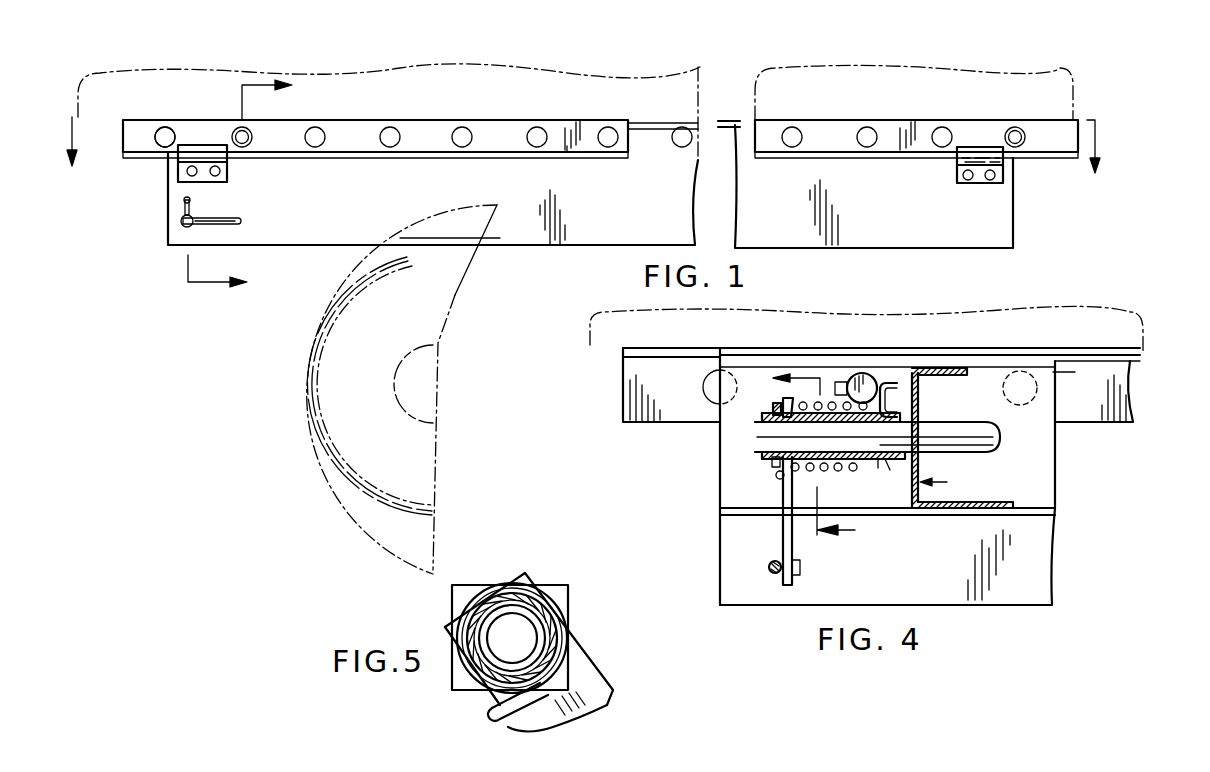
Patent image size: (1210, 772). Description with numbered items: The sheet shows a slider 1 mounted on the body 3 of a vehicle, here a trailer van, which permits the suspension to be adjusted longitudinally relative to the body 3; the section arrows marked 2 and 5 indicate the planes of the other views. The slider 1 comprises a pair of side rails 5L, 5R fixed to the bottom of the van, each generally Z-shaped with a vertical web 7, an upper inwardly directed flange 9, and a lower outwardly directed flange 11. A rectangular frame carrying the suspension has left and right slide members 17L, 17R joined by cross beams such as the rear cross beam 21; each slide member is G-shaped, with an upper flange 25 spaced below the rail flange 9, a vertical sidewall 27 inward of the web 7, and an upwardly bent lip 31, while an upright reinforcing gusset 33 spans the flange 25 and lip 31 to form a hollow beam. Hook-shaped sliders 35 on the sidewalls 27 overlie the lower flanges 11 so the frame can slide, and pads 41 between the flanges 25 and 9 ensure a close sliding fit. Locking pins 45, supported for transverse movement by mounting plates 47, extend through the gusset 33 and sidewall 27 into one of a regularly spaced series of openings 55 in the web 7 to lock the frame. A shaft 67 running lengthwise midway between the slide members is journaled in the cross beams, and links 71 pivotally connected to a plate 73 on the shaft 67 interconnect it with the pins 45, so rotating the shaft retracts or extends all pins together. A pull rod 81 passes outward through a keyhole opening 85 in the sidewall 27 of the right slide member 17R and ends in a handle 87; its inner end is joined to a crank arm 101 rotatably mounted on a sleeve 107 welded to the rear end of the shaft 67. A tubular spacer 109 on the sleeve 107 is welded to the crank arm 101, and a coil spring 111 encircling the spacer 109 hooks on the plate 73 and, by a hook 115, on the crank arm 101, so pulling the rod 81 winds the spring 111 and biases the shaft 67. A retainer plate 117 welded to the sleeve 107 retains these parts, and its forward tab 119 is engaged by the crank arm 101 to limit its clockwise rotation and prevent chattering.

In FIG. 1, the slider 1 is at (140, 230).
In FIG. 1, the section line 2- 2 is at (581, 158).
In FIG. 1, the body 3 is at (470, 87).
In FIG. 4, the body 3 is at (900, 325).
In FIG. 4, the section line 5- 5 is at (816, 458).
In FIG. 1, the right side rail 5R is at (375, 119).
In FIG. 4, the left side rail 5L is at (660, 424).
In FIG. 1, the vertical web 7 is at (1060, 142).
In FIG. 4, the vertical web 7 is at (1110, 397).
In FIG. 4, the upper flange 9 is at (1117, 353).
In FIG. 1, the lower flange 11 is at (1050, 158).
In FIG. 1, the right slide member 17R is at (433, 198).
In FIG. 4, the left slide member 17L is at (1068, 494).
In FIG. 4, the rear cross beam 21 is at (950, 483).
In FIG. 4, the upper flange 25 is at (1057, 370).
In FIG. 1, the sidewall 27 is at (460, 203).
In FIG. 4, the lip 31 is at (1040, 578).
In FIG. 4, the reinforcing gusset 33 is at (1043, 445).
In FIG. 1, the hook-shaped slider 35 is at (205, 179).
In FIG. 1, the pad 41 is at (650, 127).
In FIG. 4, the pad 41 is at (1030, 360).
In FIG. 1, the locking pin 45 is at (250, 129).
In FIG. 4, the locking pin 45 is at (884, 383).
In FIG. 4, the mounting plate 47 is at (880, 497).
In FIG. 1, the opening 55 is at (233, 128).
In FIG. 4, the opening 55 is at (707, 369).
In FIG. 4, the shaft 67 is at (980, 445).
In FIG. 5, the shaft 67 is at (533, 588).
In FIG. 4, the link 71 is at (922, 385).
In FIG. 4, the plate 73 is at (873, 467).
In FIG. 1, the pull rod 81 is at (184, 227).
In FIG. 4, the pull rod 81 is at (768, 567).
In FIG. 1, the keyhole opening 85 is at (183, 207).
In FIG. 1, the handle 87 is at (215, 226).
In FIG. 4, the crank arm 101 is at (782, 533).
In FIG. 5, the crank arm 101 is at (587, 702).
In FIG. 4, the sleeve 107 is at (765, 455).
In FIG. 5, the sleeve 107 is at (565, 631).
In FIG. 4, the tubular spacer 109 is at (805, 475).
In FIG. 5, the tubular spacer 109 is at (518, 627).
In FIG. 4, the coil spring 111 is at (835, 395).
In FIG. 5, the coil spring 111 is at (567, 653).
In FIG. 4, the hook 115 is at (776, 476).
In FIG. 4, the retainer plate 117 is at (773, 408).
In FIG. 5, the retainer plate 117 is at (465, 597).
In FIG. 5, the tab 119 is at (603, 678).